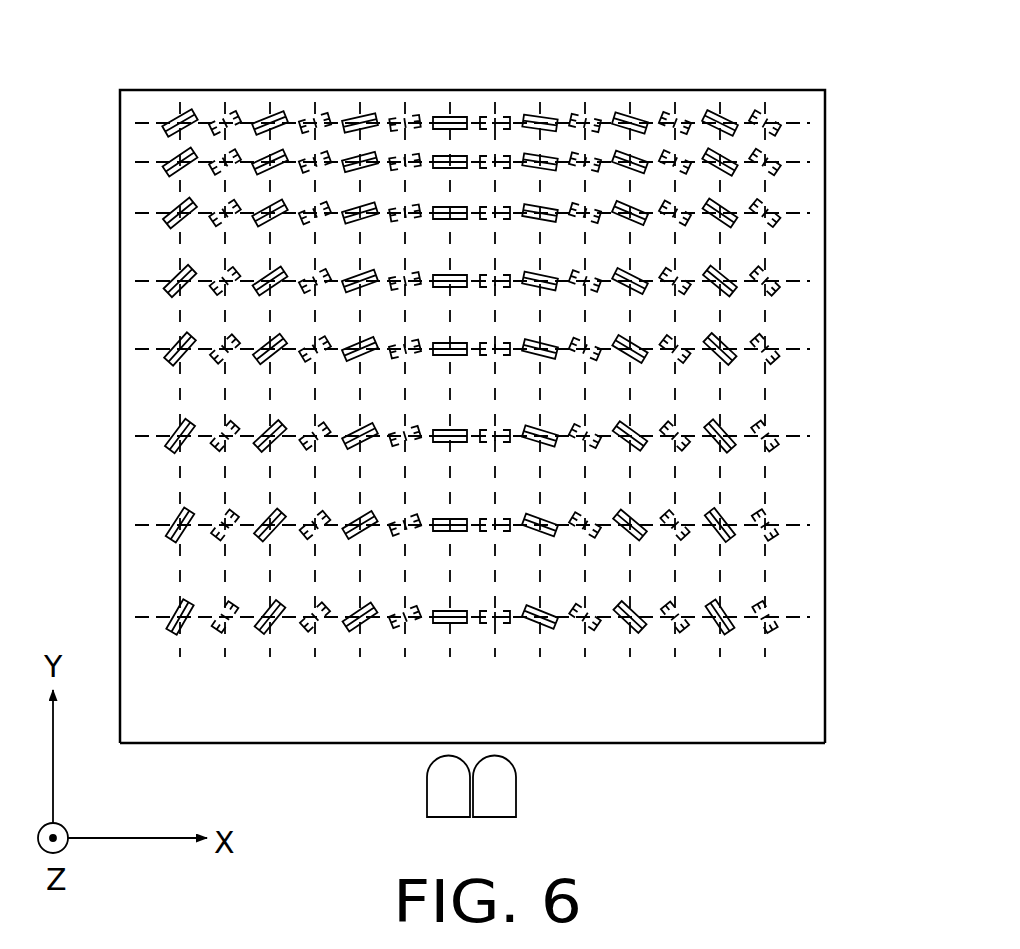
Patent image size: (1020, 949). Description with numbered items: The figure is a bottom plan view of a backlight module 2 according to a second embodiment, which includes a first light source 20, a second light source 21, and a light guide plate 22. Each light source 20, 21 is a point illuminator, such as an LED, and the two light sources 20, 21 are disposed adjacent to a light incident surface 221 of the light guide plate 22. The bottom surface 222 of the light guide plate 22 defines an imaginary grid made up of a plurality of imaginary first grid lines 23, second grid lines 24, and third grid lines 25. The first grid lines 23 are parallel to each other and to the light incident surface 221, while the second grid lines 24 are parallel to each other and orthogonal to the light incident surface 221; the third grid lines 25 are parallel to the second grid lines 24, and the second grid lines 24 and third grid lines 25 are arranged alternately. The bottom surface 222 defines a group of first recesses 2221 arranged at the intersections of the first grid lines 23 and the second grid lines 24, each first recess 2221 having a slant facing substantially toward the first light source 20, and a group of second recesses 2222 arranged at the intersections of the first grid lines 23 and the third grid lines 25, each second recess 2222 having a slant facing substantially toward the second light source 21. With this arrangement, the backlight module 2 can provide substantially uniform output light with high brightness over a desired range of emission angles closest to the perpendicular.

The backlight module 2 is at (467, 40).
The first light source 20 is at (445, 790).
The second light source 21 is at (497, 795).
The light guide plate 22 is at (841, 239).
The light incident surface 221 is at (751, 746).
The bottom surface 222 is at (802, 303).
The first recesses 2221 is at (445, 622).
The second recesses 2222 is at (503, 621).
The first grid lines 23 is at (795, 437).
The second grid lines 24 is at (448, 112).
The third grid lines 25 is at (493, 112).